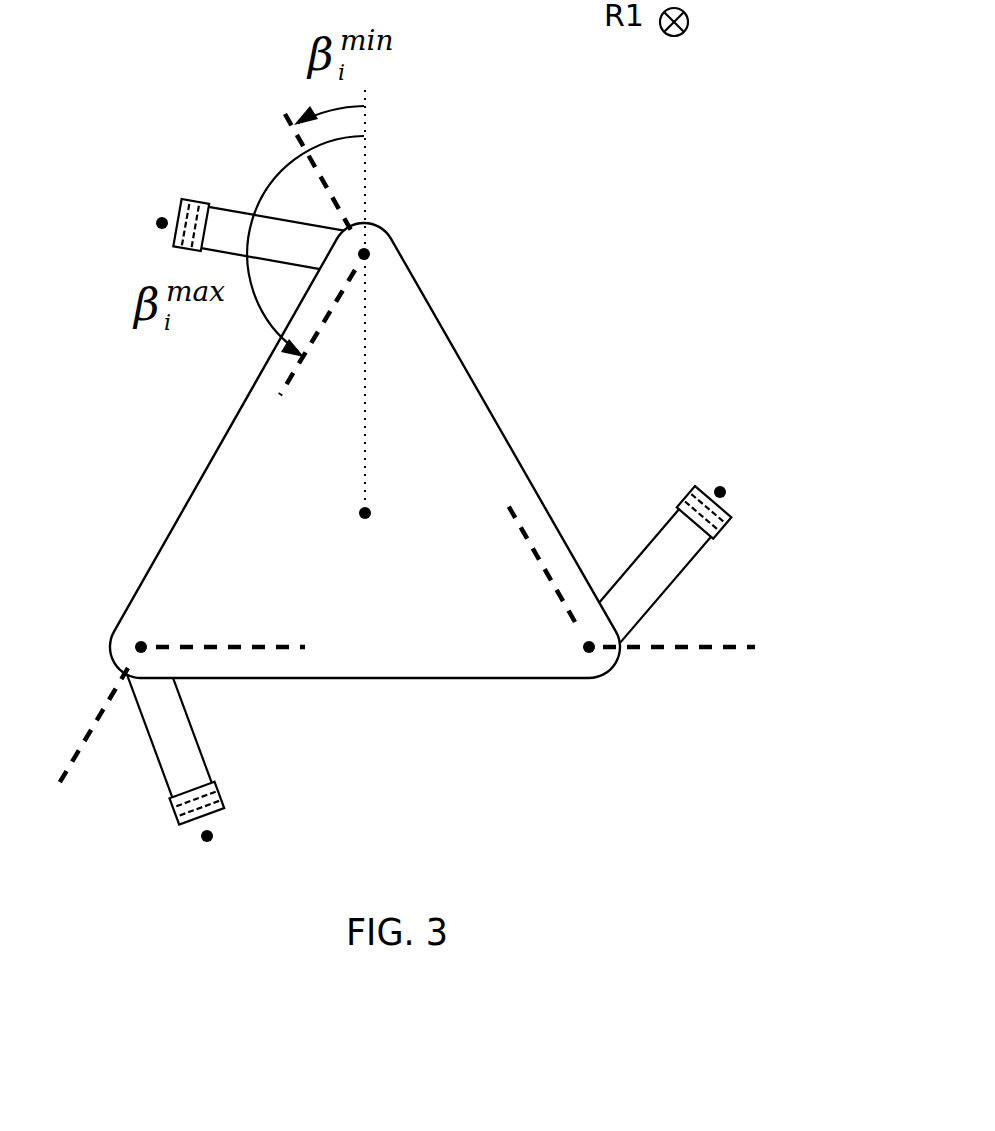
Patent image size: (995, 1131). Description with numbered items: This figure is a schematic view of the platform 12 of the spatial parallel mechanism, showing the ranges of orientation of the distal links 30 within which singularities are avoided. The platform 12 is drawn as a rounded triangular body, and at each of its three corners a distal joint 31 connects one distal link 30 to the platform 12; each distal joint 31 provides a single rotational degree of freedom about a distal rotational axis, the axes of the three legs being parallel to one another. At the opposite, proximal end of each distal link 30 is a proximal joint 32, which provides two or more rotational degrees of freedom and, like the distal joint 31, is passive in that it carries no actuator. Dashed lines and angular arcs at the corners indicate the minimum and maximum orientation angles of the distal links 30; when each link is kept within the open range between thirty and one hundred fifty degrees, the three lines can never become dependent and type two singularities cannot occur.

The platform 12 is at (441, 601).
The distal link 30 is at (668, 562).
The distal joint 31 is at (380, 260).
The proximal joint 32 is at (156, 182).